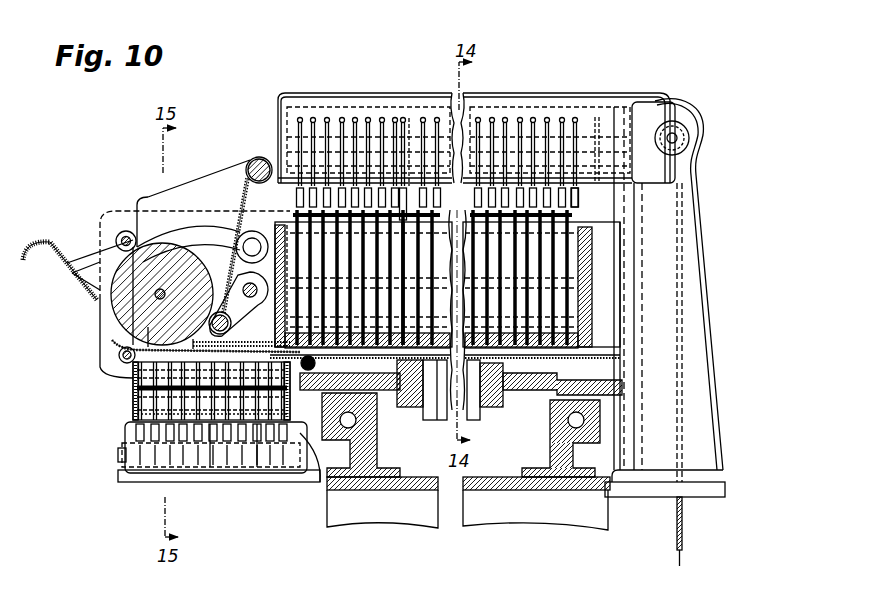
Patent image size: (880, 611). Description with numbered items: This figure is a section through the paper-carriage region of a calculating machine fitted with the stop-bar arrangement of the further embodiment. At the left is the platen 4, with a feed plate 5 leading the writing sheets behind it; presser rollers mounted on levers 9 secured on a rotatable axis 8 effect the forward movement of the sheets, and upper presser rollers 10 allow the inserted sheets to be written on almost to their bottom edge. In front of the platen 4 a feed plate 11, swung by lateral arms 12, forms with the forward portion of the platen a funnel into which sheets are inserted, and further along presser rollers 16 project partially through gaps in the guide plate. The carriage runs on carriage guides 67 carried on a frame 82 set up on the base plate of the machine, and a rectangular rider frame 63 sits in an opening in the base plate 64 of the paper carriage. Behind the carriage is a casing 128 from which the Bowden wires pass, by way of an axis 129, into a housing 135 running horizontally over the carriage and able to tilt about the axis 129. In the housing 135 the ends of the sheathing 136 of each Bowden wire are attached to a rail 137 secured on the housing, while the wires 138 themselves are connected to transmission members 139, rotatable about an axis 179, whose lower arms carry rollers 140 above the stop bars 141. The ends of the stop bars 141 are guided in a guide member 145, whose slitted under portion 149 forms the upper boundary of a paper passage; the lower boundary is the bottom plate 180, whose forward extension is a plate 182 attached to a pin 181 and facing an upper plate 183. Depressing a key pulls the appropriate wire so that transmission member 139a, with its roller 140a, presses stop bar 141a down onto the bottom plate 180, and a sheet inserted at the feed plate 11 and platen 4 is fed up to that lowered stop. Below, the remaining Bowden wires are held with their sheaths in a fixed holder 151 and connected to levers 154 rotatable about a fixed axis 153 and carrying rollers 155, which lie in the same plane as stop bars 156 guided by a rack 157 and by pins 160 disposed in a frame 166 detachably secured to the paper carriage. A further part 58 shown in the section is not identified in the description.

The platen 4 is at (150, 240).
The feed plate 5 is at (242, 180).
The rotatable axis 8 is at (162, 295).
The levers 9 is at (212, 310).
The upper presser rollers 10 is at (120, 233).
The feed plate 11 is at (50, 243).
The lateral arms 12 is at (90, 262).
The presser rollers 16 is at (133, 373).
The central support block 58 is at (423, 398).
The rectangular rider frame 63 is at (488, 394).
The base plate of the paper carriage 64 is at (540, 390).
The carriage guides 67 is at (553, 447).
The frame 82 is at (422, 492).
The casing 128 is at (703, 340).
The axis 129 is at (675, 138).
The housing 135 is at (515, 102).
The sheathing 136 is at (597, 118).
The rail 137 is at (350, 107).
The Bowden wires 138 is at (677, 563).
The transmission members 139 is at (298, 133).
The transmission member 139a is at (410, 113).
The rollers 140 is at (579, 206).
The pin slide 140a is at (402, 188).
The stop bars 141 is at (590, 318).
The stop bar 141a is at (405, 243).
The guide member 145 is at (592, 248).
The under portion 149 is at (590, 350).
The fixed holder 151 is at (303, 440).
The fixed axis 153 is at (120, 453).
The levers 154 is at (210, 450).
The rollers 155 is at (133, 433).
The stop bars 156 is at (133, 407).
The guide rack 157 is at (260, 473).
The pins 160 is at (130, 390).
The frame 166 is at (133, 414).
The axis 179 is at (263, 144).
The bottom plate 180 is at (378, 391).
The pin 181 is at (305, 393).
The plate 182 is at (110, 340).
The upper plate 183 is at (236, 341).